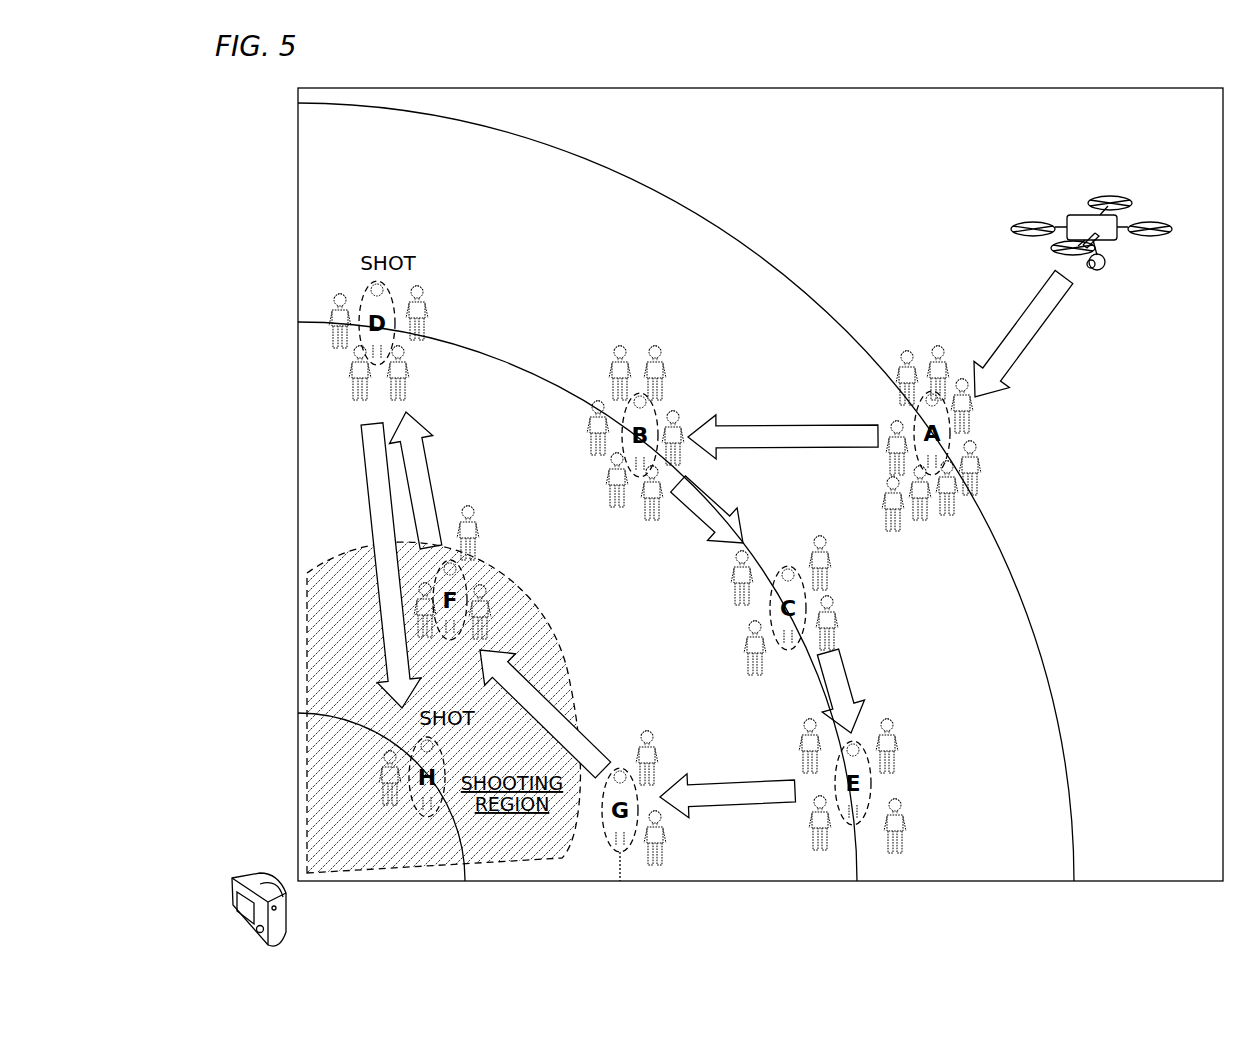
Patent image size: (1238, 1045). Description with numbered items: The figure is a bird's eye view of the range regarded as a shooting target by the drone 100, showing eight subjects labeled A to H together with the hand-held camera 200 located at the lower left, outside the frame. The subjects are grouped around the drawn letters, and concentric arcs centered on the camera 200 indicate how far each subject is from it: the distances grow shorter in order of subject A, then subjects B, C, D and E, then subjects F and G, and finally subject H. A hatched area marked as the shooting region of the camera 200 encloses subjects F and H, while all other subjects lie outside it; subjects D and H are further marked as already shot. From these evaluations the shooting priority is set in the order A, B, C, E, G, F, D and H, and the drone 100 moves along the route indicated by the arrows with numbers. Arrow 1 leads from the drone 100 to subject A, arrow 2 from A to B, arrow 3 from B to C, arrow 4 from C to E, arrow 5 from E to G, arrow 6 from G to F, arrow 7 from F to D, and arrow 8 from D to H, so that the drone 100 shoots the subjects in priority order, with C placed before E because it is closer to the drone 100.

The drone 100 is at (1082, 215).
The hand-held camera 200 is at (247, 876).
The arrow with number 1 is at (1023, 333).
The arrow with number 2 is at (783, 425).
The arrow with number 3 is at (705, 511).
The arrow with number 4 is at (849, 691).
The arrow with number 5 is at (728, 807).
The arrow with number 6 is at (545, 714).
The arrow with number 7 is at (426, 480).
The arrow with number 8 is at (378, 565).